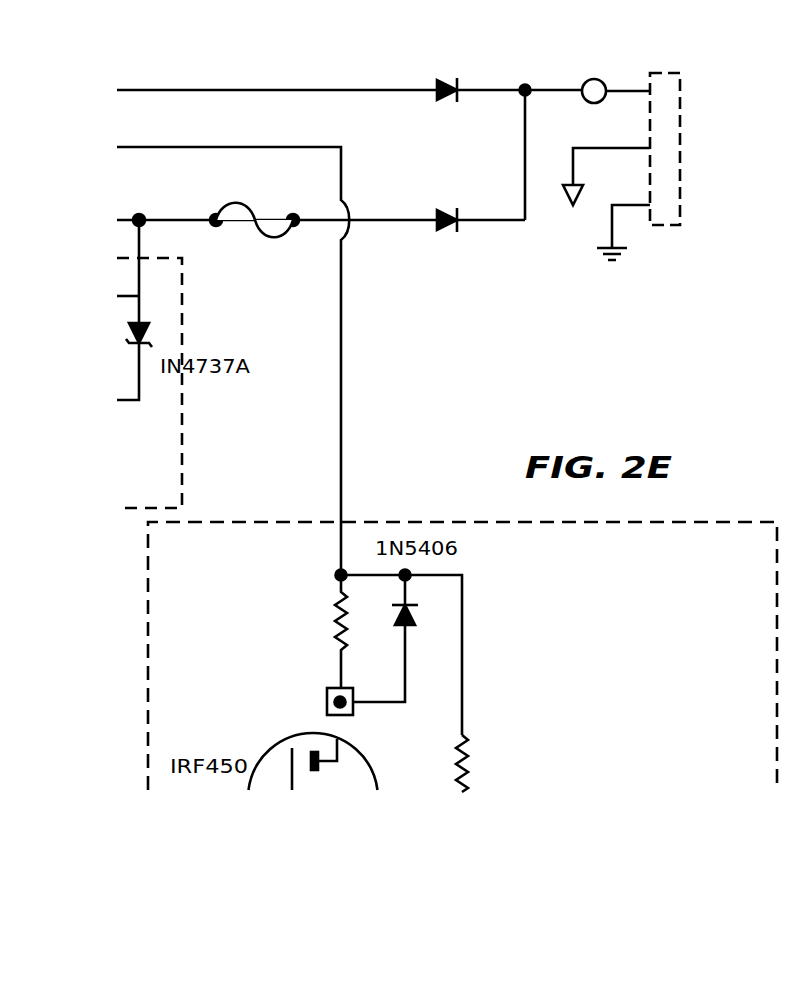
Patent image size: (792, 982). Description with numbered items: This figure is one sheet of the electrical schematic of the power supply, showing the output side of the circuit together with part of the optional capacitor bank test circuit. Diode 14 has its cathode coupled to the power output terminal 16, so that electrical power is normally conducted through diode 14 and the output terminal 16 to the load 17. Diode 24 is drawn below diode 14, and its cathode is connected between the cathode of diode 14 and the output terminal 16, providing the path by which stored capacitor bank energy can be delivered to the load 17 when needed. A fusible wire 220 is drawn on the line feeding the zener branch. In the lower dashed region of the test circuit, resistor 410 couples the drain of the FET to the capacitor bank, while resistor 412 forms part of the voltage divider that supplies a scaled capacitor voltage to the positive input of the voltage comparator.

The diode 14 is at (447, 96).
The diode 24 is at (447, 210).
The power output terminal 16 is at (605, 80).
The load 17 is at (692, 110).
The 100 Amp fusible wire 220 is at (145, 225).
The resistor 410 is at (336, 598).
The resistor 412 is at (465, 740).